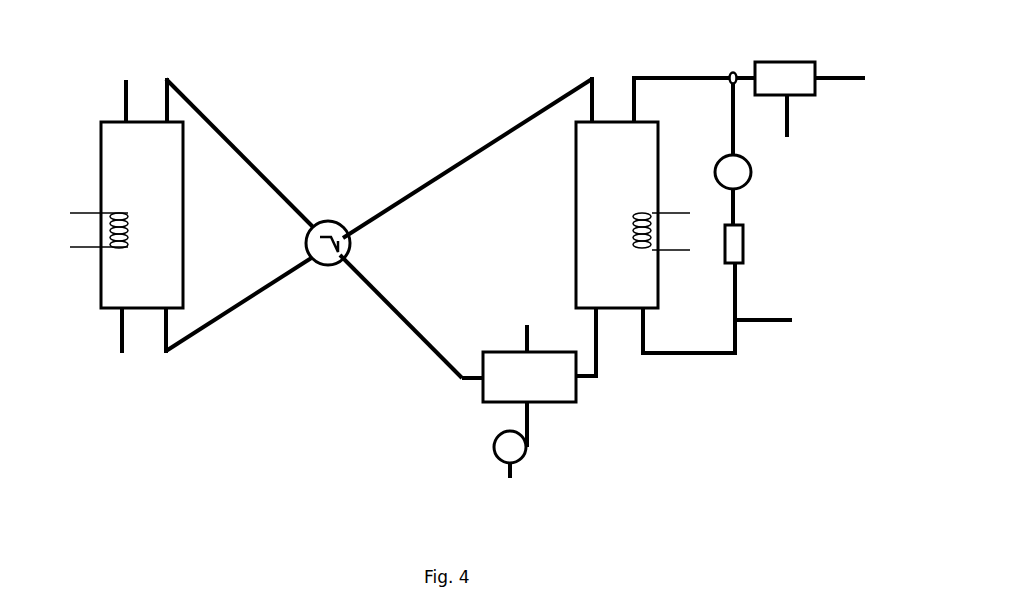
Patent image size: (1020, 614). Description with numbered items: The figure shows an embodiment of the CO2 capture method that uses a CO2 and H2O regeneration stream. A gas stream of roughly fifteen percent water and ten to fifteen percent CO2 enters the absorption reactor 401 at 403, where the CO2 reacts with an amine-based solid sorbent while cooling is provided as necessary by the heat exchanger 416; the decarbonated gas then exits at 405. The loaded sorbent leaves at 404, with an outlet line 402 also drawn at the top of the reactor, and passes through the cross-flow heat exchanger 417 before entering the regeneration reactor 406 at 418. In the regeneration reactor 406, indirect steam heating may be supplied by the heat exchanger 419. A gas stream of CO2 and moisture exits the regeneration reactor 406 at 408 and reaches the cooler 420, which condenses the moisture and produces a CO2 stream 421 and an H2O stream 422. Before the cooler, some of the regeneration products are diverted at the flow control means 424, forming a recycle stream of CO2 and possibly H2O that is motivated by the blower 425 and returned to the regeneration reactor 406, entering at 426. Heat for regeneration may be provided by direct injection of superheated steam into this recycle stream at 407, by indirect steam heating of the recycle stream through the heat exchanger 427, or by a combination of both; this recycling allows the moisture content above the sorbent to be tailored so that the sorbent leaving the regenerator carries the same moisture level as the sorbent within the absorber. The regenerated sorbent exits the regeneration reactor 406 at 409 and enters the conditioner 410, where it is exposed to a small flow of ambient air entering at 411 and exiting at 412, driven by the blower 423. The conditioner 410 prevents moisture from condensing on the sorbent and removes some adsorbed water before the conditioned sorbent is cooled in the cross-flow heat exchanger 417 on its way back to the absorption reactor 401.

The absorption reactor 401 is at (142, 215).
The first tank outlet pipe 402 is at (166, 93).
The stream inlet 403 is at (120, 332).
The loaded sorbent outlet 404 is at (165, 337).
The decarbonated gas outlet 405 is at (122, 93).
The regeneration reactor 406 is at (617, 215).
The superheated steam injection point 407 is at (775, 323).
The regeneration gas outlet 408 is at (636, 95).
The regenerated sorbent outlet 409 is at (598, 325).
The conditioner 410 is at (519, 377).
The ambient air inlet 411 is at (530, 415).
The ambient air outlet 412 is at (523, 337).
The heat exchanger 416 is at (83, 252).
The cross-flow heat exchanger 417 is at (336, 218).
The loaded sorbent inlet 418 is at (593, 92).
The heat exchanger 419 is at (680, 252).
The cooler 420 is at (785, 78).
The CO2 stream 421 is at (865, 82).
The H2O stream 422 is at (790, 117).
The blower 423 is at (508, 447).
The flow control means 424 is at (733, 72).
The blower 425 is at (740, 175).
The recycle stream inlet 426 is at (670, 355).
The heat exchanger 427 is at (740, 247).